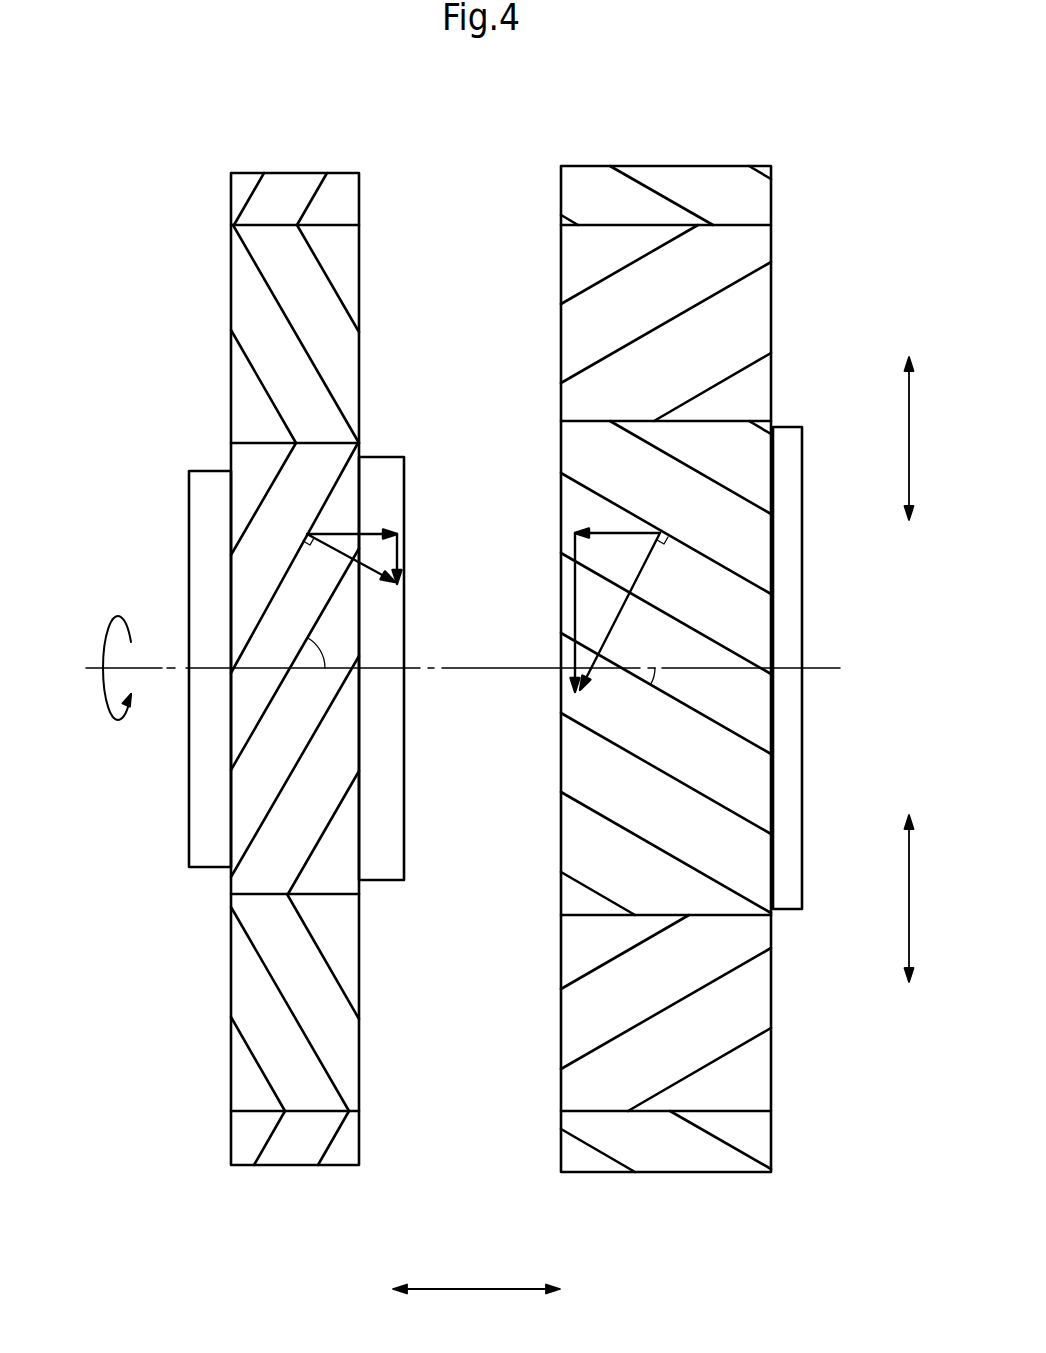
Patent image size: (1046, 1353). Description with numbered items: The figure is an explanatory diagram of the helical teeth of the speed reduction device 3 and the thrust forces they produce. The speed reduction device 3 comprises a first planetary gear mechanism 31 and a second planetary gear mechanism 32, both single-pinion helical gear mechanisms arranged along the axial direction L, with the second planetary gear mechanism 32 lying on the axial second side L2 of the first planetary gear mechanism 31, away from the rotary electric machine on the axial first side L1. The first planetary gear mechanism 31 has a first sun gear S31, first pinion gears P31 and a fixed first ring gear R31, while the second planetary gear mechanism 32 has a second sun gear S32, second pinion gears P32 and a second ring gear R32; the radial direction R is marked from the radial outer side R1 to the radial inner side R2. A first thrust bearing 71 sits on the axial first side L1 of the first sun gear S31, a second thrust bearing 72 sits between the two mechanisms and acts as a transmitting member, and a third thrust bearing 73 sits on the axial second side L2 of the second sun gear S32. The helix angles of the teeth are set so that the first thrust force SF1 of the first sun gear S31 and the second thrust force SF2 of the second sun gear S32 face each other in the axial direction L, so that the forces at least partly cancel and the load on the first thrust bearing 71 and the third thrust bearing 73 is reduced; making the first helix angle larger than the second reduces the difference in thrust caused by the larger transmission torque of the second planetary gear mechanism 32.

The speed reduction device 3 is at (480, 625).
The first planetary gear mechanism 31 is at (215, 621).
The second planetary gear mechanism 32 is at (677, 631).
The first ring gear R31 is at (295, 182).
The second ring gear R32 is at (672, 180).
The first pinion gears P31 is at (230, 303).
The second pinion gears P32 is at (756, 302).
The first sun gear S31 is at (238, 458).
The second sun gear S32 is at (562, 837).
The first thrust bearing 71 is at (197, 513).
The second thrust bearing 72 is at (382, 463).
The third thrust bearing 73 is at (795, 495).
The first thrust force SF1 is at (367, 530).
The second thrust force SF2 is at (620, 530).
The radial direction R is at (923, 669).
The radial outer side R1 is at (911, 670).
The radial inner side R2 is at (912, 671).
The axial direction L is at (476, 1275).
The axial first side L1 is at (376, 1290).
The axial second side L2 is at (578, 1290).